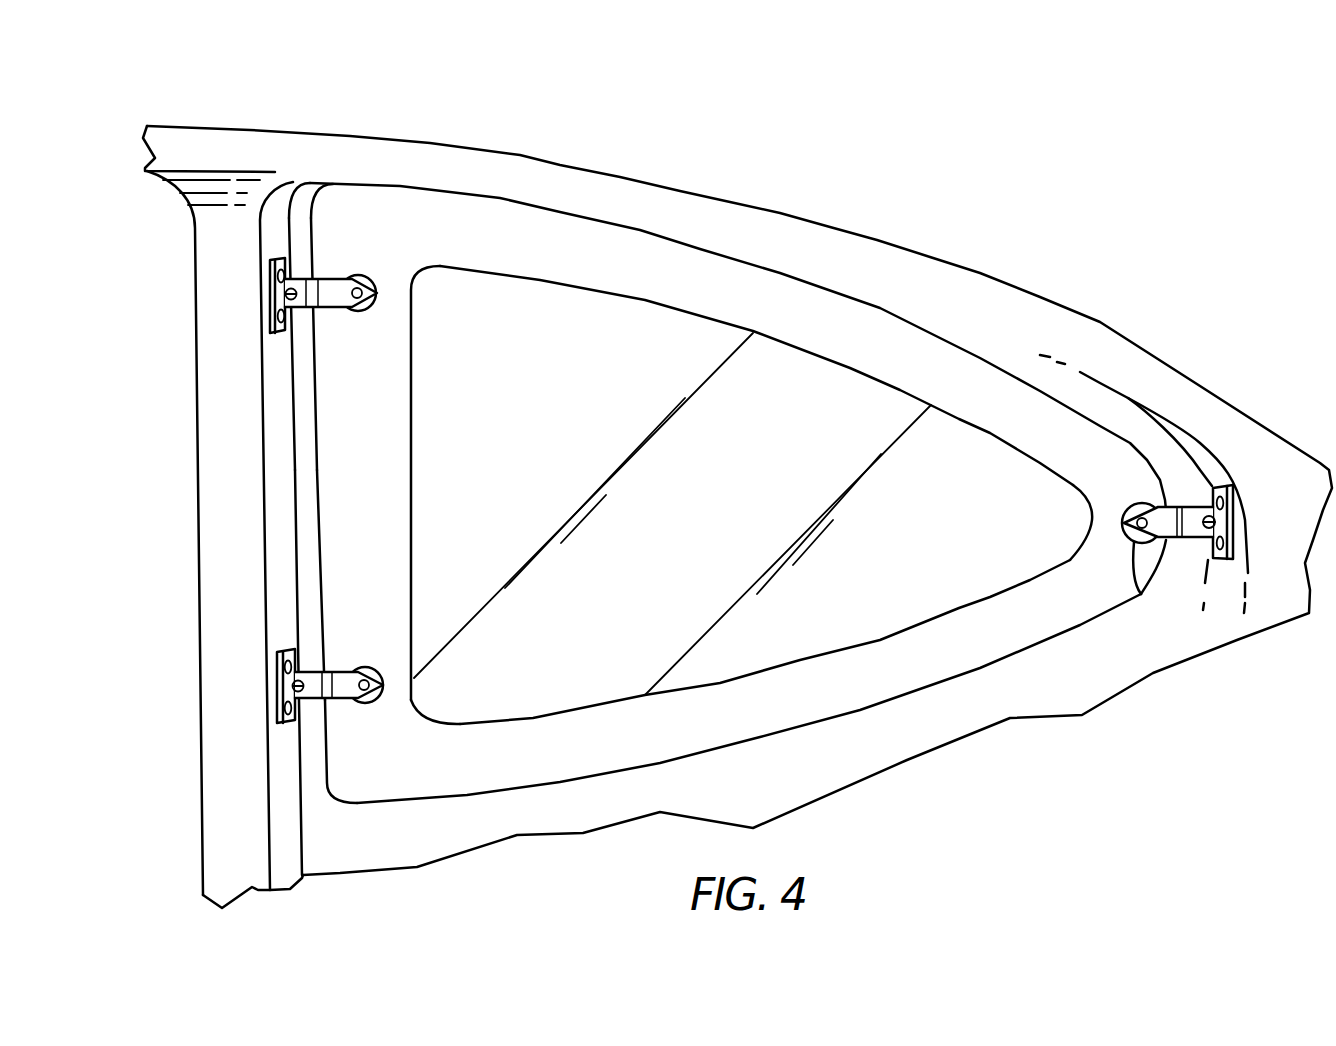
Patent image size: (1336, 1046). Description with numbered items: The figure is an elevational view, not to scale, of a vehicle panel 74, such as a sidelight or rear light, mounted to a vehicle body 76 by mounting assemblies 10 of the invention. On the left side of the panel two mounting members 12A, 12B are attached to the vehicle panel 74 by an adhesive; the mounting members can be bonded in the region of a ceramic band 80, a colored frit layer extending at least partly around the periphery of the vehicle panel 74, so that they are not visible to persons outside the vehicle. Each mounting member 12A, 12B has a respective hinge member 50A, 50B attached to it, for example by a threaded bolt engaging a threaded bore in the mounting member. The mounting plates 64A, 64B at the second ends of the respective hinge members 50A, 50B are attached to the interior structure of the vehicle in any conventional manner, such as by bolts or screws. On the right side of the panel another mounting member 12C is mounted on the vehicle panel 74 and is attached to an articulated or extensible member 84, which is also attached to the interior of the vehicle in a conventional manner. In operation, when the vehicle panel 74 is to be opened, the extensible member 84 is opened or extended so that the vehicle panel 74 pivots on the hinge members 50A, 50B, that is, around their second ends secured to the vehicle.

The mounting assembly 10 is at (351, 642).
The mounting member 12A is at (365, 272).
The mounting member 12B is at (367, 705).
The mounting member 12C is at (1141, 594).
The hinge member 50A is at (303, 285).
The hinge member 50B is at (310, 698).
The mounting plate 64A is at (283, 256).
The mounting plate 64B is at (294, 648).
The vehicle panel 74 is at (670, 340).
The vehicle body 76 is at (207, 373).
The ceramic band 80 is at (815, 305).
The extensible member 84 is at (1155, 508).